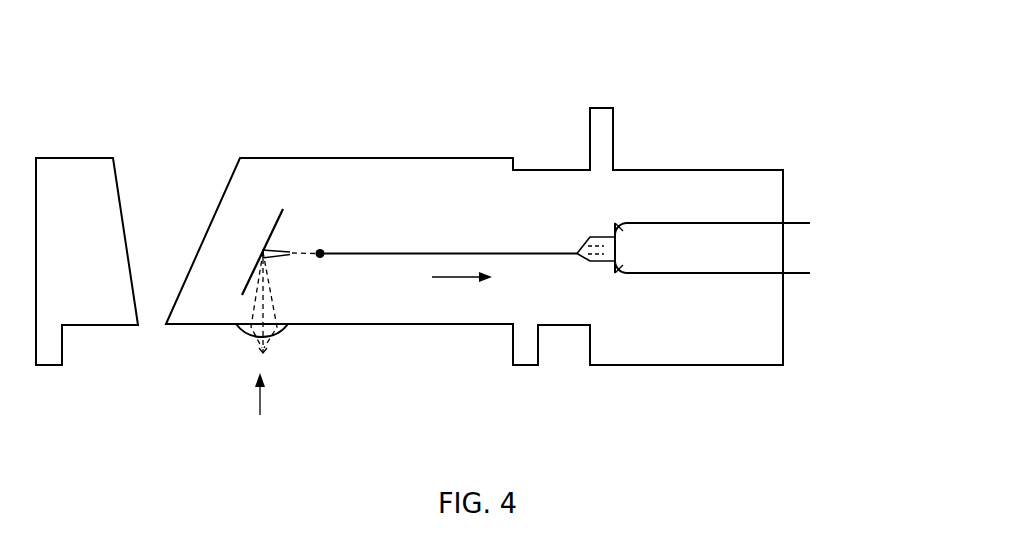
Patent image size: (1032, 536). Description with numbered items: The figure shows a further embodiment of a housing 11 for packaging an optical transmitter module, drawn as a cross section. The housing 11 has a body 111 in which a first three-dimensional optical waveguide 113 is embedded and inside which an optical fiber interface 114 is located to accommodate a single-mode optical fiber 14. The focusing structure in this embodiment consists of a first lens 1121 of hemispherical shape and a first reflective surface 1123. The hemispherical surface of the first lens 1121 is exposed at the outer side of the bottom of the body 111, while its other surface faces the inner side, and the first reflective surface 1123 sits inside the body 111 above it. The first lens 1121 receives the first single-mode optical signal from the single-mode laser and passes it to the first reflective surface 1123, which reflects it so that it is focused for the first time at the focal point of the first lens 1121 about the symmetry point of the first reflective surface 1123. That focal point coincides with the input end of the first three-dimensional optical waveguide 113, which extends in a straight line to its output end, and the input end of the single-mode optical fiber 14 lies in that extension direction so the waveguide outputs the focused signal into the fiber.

The housing 11 is at (228, 183).
The body 111 is at (255, 172).
The first 3D optical waveguide 113 is at (427, 253).
The optical fiber interface 114 is at (623, 225).
The single-mode optical fiber 14 is at (667, 248).
The first reflective surface 1123 is at (262, 246).
The first lens 1121 is at (279, 327).